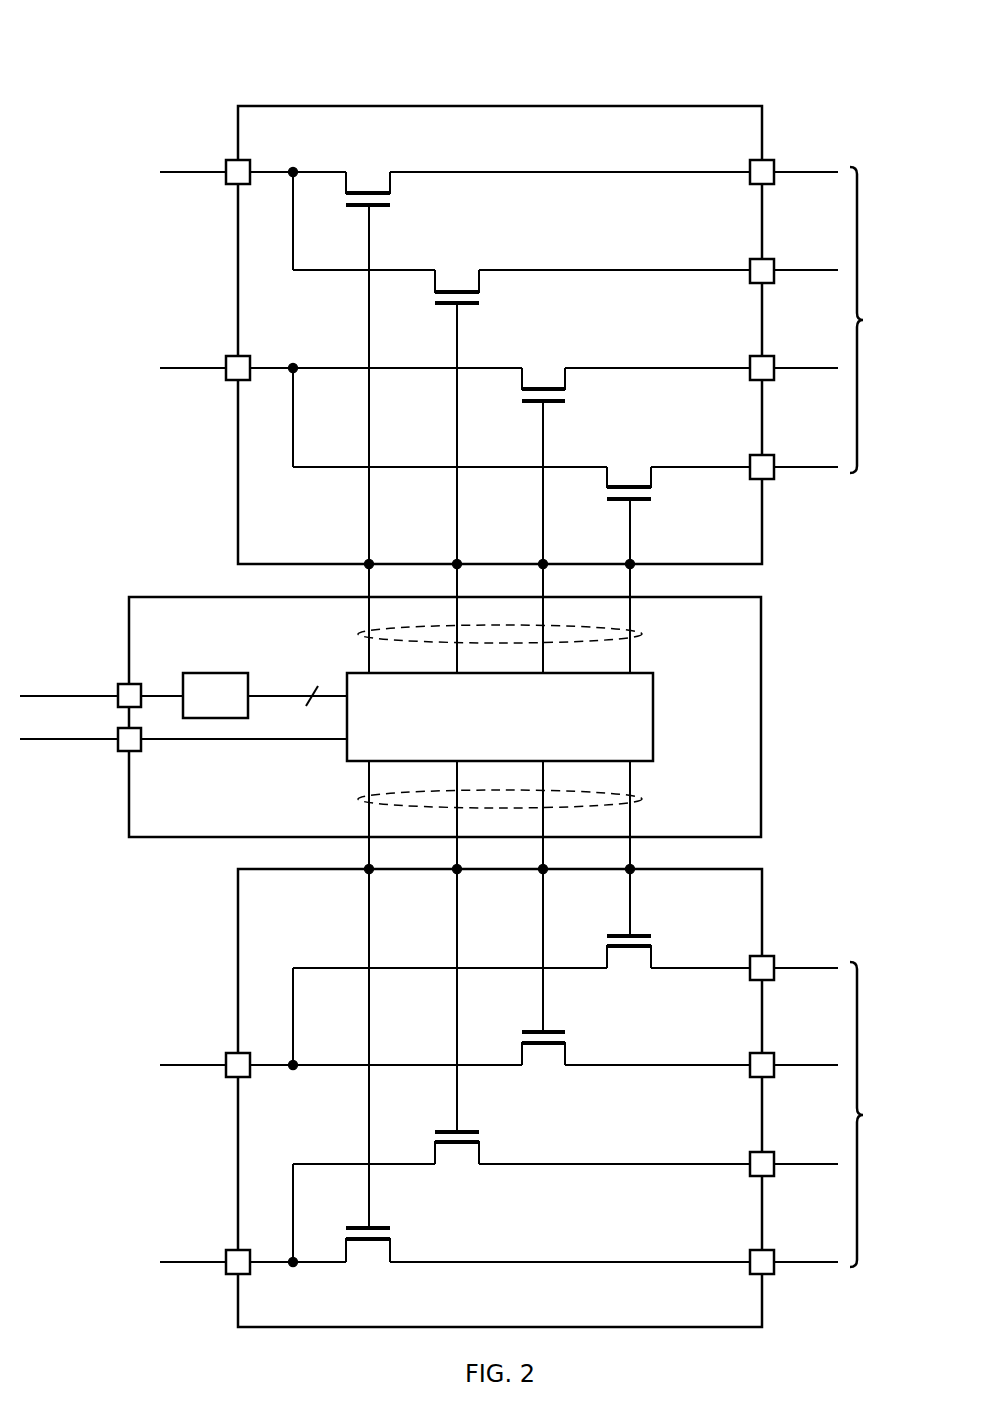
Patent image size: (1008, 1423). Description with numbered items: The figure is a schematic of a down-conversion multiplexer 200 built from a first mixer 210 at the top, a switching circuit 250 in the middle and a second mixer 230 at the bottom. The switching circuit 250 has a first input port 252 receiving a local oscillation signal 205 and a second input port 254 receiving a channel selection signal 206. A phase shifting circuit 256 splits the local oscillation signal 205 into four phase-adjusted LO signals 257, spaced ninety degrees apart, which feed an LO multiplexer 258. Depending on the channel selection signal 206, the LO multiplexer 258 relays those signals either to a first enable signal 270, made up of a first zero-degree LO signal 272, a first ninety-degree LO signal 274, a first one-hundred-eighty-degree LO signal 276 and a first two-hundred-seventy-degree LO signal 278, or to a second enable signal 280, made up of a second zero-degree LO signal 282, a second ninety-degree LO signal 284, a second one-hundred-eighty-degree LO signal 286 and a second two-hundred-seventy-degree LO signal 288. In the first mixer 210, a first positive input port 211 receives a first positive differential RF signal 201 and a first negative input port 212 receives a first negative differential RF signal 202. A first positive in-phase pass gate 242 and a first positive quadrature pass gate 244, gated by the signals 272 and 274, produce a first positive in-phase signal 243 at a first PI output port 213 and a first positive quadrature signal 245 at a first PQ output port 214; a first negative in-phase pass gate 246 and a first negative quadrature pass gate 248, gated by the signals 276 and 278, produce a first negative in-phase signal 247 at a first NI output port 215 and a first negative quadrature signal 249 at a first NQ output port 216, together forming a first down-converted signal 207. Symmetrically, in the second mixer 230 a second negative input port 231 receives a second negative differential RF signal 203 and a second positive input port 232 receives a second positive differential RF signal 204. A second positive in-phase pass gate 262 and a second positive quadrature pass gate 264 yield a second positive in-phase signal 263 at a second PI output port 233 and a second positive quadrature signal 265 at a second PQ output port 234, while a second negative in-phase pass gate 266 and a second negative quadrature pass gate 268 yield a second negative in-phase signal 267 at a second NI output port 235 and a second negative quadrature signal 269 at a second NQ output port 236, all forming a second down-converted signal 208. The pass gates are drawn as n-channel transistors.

The down-conversion multiplexer 200 is at (295, 60).
The first positive differential RF signal 201 is at (195, 174).
The first negative differential RF signal 202 is at (195, 371).
The second negative differential RF signal 203 is at (195, 1064).
The second positive differential RF signal 204 is at (195, 1261).
The local oscillation signal 205 is at (52, 695).
The channel selection signal 206 is at (52, 742).
The first down-converted signal 207 is at (881, 320).
The second down-converted signal 208 is at (881, 1114).
The first mixer 210 is at (481, 150).
The first positive input port 211 is at (228, 160).
The first negative input port 212 is at (228, 356).
The first PI output port 213 is at (774, 160).
The first PQ output port 214 is at (774, 259).
The first NI output port 215 is at (774, 356).
The first NQ output port 216 is at (774, 455).
The second mixer 230 is at (481, 1307).
The second negative input port 231 is at (228, 1077).
The second positive input port 232 is at (228, 1274).
The second PI output port 233 is at (774, 980).
The second PQ output port 234 is at (774, 1077).
The second NI output port 235 is at (774, 1176).
The second NQ output port 236 is at (774, 1274).
The first positive in-phase pass gate 242 is at (365, 209).
The first positive in-phase signal 243 is at (631, 170).
The first positive quadrature pass gate 244 is at (454, 307).
The first positive quadrature signal 245 is at (651, 269).
The first negative in-phase pass gate 246 is at (554, 405).
The first negative in-phase signal 247 is at (676, 366).
The first negative quadrature pass gate 248 is at (636, 507).
The first negative quadrature signal 249 is at (696, 465).
The switching circuit 250 is at (764, 715).
The first input port 252 is at (119, 684).
The second input port 254 is at (117, 752).
The phase shifting circuit 256 is at (215, 673).
The phase-adjusted LO signals 257 is at (294, 696).
The LO multiplexer 258 is at (481, 732).
The second positive in-phase pass gate 262 is at (365, 1226).
The second positive in-phase signal 263 is at (633, 1264).
The second positive quadrature pass gate 264 is at (454, 1129).
The second positive quadrature signal 265 is at (653, 1166).
The second negative in-phase pass gate 266 is at (554, 1031).
The second negative in-phase signal 267 is at (678, 1067).
The second negative quadrature pass gate 268 is at (641, 934).
The second negative quadrature signal 269 is at (695, 970).
The first enable signal 270 is at (642, 634).
The first LO_0 signal 272 is at (368, 526).
The first LO_90 signal 274 is at (456, 517).
The first LO_180 signal 276 is at (542, 526).
The first LO_270 signal 278 is at (630, 534).
The second enable signal 280 is at (642, 799).
The second LO_0 signal 282 is at (369, 907).
The second LO_90 signal 284 is at (457, 918).
The second LO_180 signal 286 is at (543, 907).
The second LO_270 signal 288 is at (630, 896).